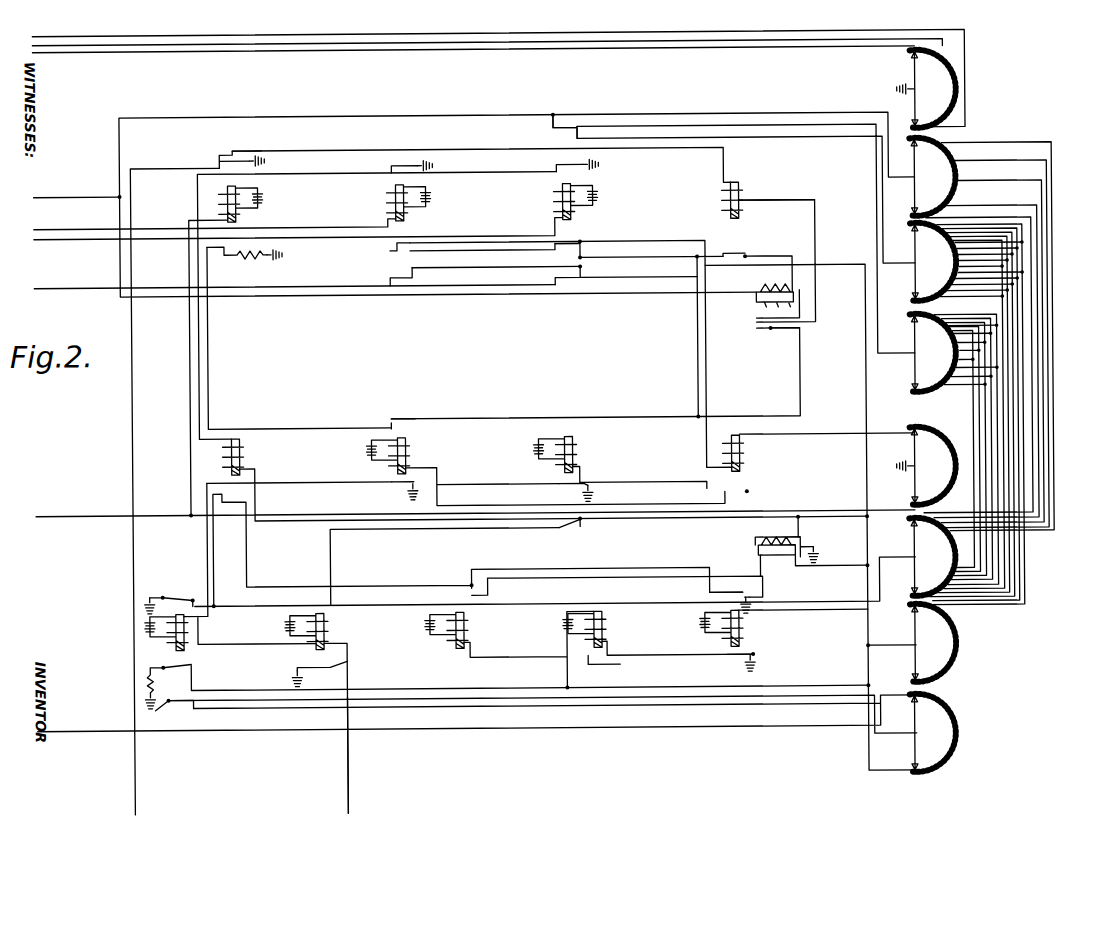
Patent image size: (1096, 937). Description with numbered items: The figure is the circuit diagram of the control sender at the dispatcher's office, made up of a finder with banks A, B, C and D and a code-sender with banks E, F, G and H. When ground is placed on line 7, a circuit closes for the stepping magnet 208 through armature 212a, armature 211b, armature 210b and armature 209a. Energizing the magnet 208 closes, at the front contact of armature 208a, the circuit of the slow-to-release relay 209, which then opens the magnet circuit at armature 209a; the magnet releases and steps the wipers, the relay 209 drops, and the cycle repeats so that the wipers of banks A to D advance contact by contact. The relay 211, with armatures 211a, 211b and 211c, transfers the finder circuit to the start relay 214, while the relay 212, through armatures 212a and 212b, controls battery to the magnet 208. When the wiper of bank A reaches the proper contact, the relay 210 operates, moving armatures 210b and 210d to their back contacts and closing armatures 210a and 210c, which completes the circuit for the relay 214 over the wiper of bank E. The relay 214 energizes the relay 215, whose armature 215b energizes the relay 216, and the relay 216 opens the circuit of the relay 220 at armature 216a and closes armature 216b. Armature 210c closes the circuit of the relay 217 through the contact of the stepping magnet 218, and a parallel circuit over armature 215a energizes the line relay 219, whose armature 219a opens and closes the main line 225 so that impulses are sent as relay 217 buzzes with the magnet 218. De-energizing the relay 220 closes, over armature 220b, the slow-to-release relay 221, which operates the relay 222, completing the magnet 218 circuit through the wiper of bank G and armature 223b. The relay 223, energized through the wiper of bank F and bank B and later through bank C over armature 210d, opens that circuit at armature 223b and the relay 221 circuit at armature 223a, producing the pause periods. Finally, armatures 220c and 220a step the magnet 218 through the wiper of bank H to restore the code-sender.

The line 7 is at (66, 200).
The stepping magnet 208 is at (752, 310).
The armature 208a is at (760, 338).
The slow-to-release relay 209 is at (720, 208).
The armature 209a is at (738, 256).
The relay 210 is at (552, 208).
The armature 210a is at (582, 284).
The armature 210b is at (572, 247).
The armature 210c is at (554, 170).
The armature 210d is at (578, 122).
The relay 211 is at (385, 208).
The armature 211a is at (387, 280).
The armature 211b is at (387, 251).
The armature 211c is at (389, 170).
The relay 212 is at (240, 214).
The armature 212a is at (228, 262).
The armature 212b is at (238, 158).
The start relay 214 is at (740, 462).
The relay 215 is at (573, 452).
The armature 215a is at (562, 536).
The armature 215b is at (552, 490).
The relay 216 is at (406, 452).
The armature 216a is at (395, 490).
The armature 216b is at (402, 412).
The relay 217 is at (244, 460).
The stepping magnet 218 is at (766, 563).
The line relay 219 is at (323, 640).
The armature 219a is at (340, 672).
The relay 220 is at (183, 640).
The armature 220a is at (158, 714).
The armature 220b is at (186, 670).
The armature 220c is at (170, 597).
The slow-to-release relay 221 is at (601, 640).
The relay 222 is at (463, 640).
The relay 223 is at (738, 638).
The armature 223a is at (752, 664).
The armature 223b is at (716, 594).
The main line 225 is at (344, 782).
The bank A is at (926, 88).
The bank B is at (932, 177).
The bank C is at (933, 262).
The bank D is at (933, 353).
The bank E is at (926, 466).
The bank F is at (932, 557).
The bank G is at (933, 643).
The bank H is at (933, 733).